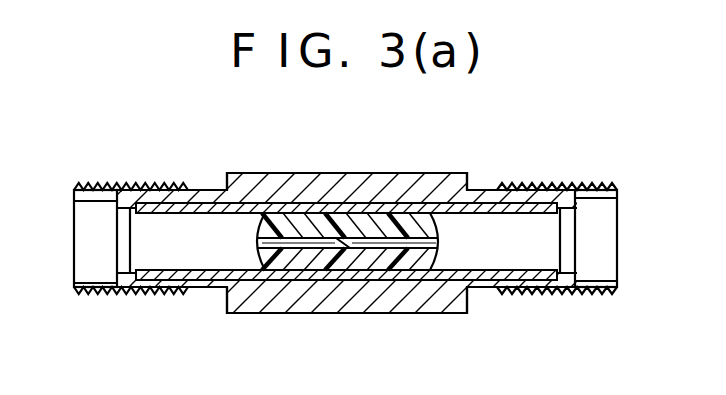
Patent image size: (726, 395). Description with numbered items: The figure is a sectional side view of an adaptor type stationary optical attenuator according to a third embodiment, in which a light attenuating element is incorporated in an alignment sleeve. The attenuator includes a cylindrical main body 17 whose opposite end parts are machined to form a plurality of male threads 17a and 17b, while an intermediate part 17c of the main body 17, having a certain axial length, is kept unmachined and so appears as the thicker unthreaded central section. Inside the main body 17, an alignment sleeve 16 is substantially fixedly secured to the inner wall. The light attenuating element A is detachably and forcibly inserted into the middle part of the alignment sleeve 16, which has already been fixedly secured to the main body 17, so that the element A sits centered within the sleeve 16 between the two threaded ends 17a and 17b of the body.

The cylindrical main body 17 is at (404, 171).
The male threads 17a is at (158, 187).
The male threads 17b is at (581, 190).
The intermediate part 17c is at (439, 178).
The alignment sleeve 16 is at (492, 202).
The light attenuating element A is at (308, 220).